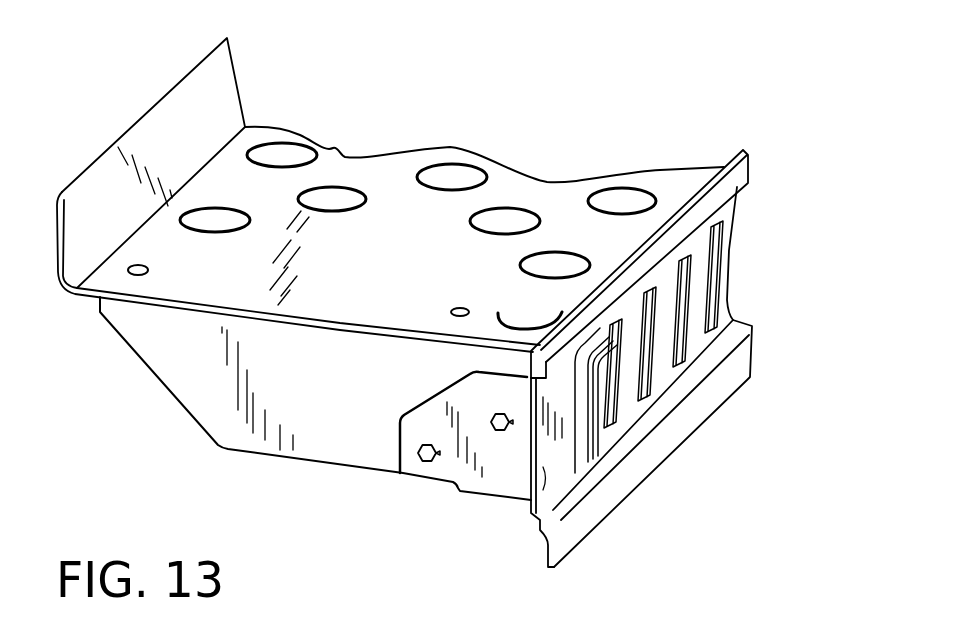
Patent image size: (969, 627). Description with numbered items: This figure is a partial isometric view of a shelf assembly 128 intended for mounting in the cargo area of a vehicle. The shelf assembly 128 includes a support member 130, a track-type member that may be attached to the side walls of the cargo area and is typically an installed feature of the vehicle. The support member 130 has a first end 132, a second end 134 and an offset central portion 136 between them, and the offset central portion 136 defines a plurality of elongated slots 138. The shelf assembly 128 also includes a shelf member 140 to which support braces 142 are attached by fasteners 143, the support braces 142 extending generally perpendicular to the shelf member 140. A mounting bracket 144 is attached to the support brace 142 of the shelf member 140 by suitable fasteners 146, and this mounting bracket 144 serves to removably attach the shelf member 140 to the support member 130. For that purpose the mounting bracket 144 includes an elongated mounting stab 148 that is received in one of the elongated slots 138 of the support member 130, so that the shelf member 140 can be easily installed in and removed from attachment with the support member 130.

The shelf assembly 128 is at (475, 116).
The support member 130 is at (755, 397).
The first end 132 is at (582, 508).
The second end 134 is at (728, 178).
The offset central portion 136 is at (527, 507).
The elongated slots 138 is at (722, 312).
The shelf member 140 is at (340, 145).
The support braces 142 is at (263, 447).
The fasteners 143 is at (150, 268).
The mounting bracket 144 is at (488, 483).
The fasteners 146 is at (492, 418).
The mounting stab 148 is at (600, 453).